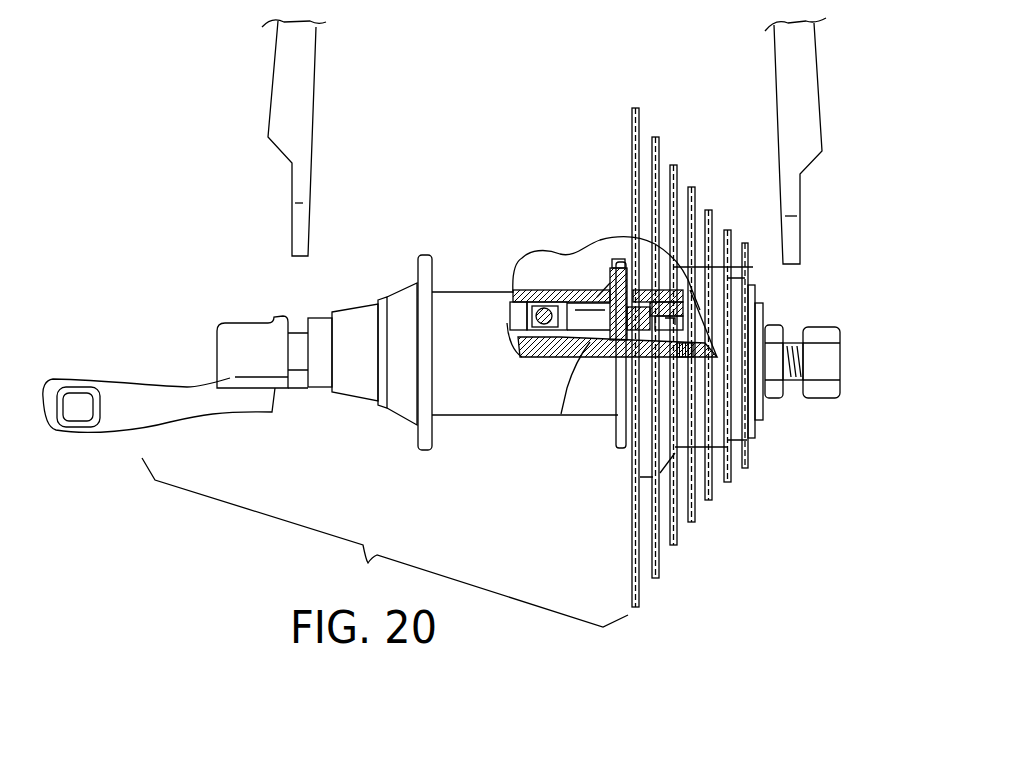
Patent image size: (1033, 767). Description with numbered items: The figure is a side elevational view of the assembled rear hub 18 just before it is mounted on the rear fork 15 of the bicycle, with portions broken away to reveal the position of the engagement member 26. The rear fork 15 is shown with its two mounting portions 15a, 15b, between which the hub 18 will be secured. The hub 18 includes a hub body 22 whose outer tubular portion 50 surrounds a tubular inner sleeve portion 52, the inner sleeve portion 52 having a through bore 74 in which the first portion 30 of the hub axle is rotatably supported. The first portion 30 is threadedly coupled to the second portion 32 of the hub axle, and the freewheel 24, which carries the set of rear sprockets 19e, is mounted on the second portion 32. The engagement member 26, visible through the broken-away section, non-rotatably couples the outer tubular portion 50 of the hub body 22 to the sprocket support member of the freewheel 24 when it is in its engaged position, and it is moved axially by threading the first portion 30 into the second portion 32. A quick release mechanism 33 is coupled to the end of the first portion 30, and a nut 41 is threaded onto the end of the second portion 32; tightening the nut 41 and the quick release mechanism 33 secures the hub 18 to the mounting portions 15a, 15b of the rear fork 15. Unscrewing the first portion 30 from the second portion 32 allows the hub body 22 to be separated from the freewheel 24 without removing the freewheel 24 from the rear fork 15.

The rear fork 15 is at (318, 70).
The mounting portion 15b is at (308, 193).
The mounting portion 15a is at (800, 210).
The rear hub 18 is at (560, 135).
The freewheel 24 is at (700, 332).
The rear sprockets 19e is at (711, 498).
The outer tubular portion 50 is at (466, 288).
The engagement member 26 is at (583, 297).
The through bore 74 is at (533, 358).
The inner sleeve portion 52 is at (598, 350).
The hub body 22 is at (516, 450).
The quick release mechanism 33 is at (215, 350).
The first portion 30 is at (300, 373).
The second portion 32 is at (793, 383).
The nut 41 is at (822, 325).